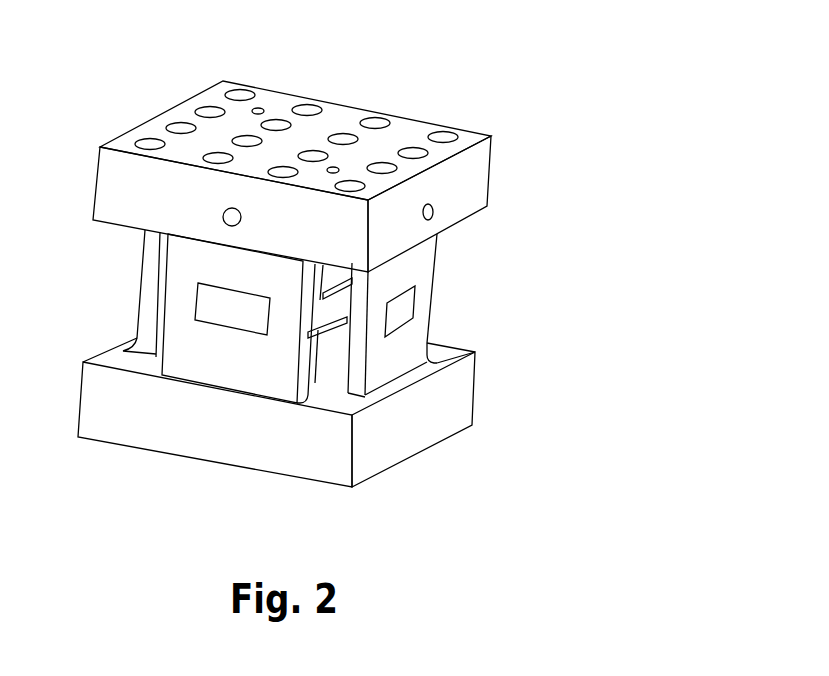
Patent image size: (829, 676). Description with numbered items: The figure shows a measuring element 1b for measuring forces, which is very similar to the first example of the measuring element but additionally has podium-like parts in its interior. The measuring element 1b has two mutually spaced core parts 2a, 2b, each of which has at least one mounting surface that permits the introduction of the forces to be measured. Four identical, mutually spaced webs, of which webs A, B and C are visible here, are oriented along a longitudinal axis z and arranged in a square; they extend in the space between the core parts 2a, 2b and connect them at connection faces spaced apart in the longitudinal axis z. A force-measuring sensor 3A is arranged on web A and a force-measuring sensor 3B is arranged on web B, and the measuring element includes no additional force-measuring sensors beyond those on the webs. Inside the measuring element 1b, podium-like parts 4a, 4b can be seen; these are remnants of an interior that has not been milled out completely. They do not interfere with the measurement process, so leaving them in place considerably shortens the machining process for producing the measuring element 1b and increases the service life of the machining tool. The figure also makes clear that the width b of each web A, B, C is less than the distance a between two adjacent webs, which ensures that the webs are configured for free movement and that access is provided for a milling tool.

The measuring element 1b is at (571, 70).
The core part 2a is at (477, 187).
The core part 2b is at (460, 405).
The force-measuring sensor 3A is at (405, 315).
The force-measuring sensor 3B is at (208, 302).
The podium-like part 4a is at (333, 282).
The podium-like part 4b is at (328, 360).
The web A is at (434, 315).
The web B is at (171, 330).
The web C is at (145, 321).
The longitudinal axis z is at (300, 108).
The distance between two adjacent webs a is at (162, 355).
The width of each web b is at (158, 335).